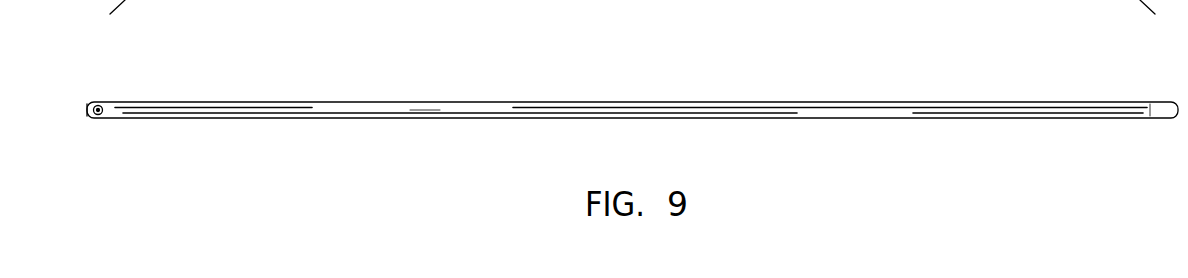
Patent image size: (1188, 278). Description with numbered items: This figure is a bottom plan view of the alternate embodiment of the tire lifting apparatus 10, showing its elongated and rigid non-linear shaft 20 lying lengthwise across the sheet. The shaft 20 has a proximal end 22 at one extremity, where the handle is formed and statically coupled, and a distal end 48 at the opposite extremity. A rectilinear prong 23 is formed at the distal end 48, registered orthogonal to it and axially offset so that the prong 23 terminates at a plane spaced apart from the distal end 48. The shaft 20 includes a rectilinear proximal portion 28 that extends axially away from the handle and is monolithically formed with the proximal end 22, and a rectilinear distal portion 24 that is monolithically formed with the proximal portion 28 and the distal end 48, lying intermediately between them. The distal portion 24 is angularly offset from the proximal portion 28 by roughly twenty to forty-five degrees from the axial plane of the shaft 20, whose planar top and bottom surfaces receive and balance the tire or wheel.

The tire lifting apparatus 10 is at (470, 83).
The shaft 20 is at (732, 92).
The proximal end 22 is at (1128, 108).
The prong 23 is at (102, 106).
The distal portion 24 is at (223, 112).
The proximal portion 28 is at (422, 108).
The distal end 48 is at (113, 121).